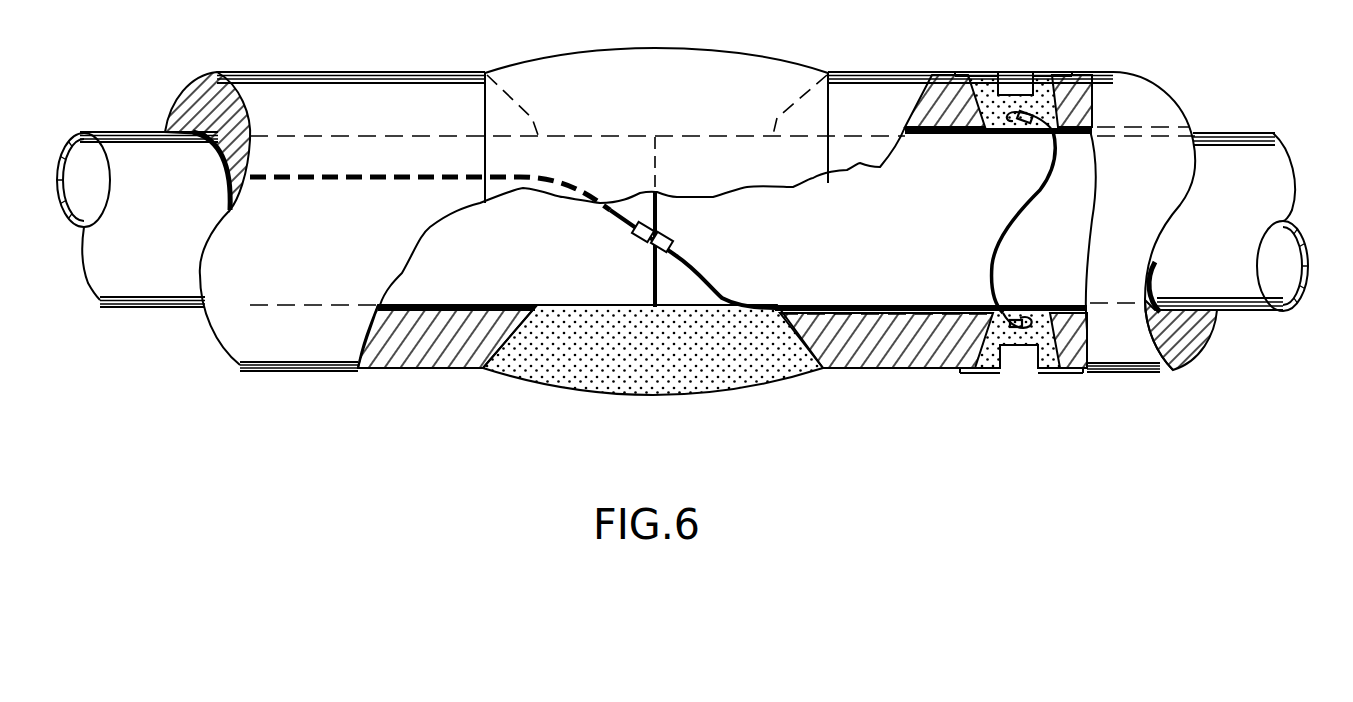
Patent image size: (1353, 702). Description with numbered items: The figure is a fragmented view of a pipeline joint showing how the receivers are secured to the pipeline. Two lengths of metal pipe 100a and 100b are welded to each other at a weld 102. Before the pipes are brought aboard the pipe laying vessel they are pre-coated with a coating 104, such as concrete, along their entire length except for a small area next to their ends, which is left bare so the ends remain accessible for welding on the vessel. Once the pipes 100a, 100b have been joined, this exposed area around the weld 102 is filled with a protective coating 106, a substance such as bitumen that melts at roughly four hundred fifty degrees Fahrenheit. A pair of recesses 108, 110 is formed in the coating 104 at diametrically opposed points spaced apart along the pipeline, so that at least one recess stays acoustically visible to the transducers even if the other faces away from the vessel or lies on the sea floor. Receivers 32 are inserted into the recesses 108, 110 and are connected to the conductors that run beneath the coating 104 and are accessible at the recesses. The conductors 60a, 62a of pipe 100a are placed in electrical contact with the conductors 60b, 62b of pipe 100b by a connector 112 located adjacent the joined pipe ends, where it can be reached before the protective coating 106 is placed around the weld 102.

The metal pipe 100a is at (158, 128).
The metal pipe 100b is at (1230, 132).
The weld 102 is at (655, 136).
The coating 104 is at (430, 368).
The protective coating 106 is at (702, 370).
The recess 108 is at (998, 372).
The recess 110 is at (1000, 75).
The connector 112 is at (666, 242).
The receiver 32 is at (1013, 92).
The conductor 60a is at (430, 197).
The conductor 62a is at (316, 181).
The conductor 60b is at (832, 222).
The conductor 62b is at (720, 300).